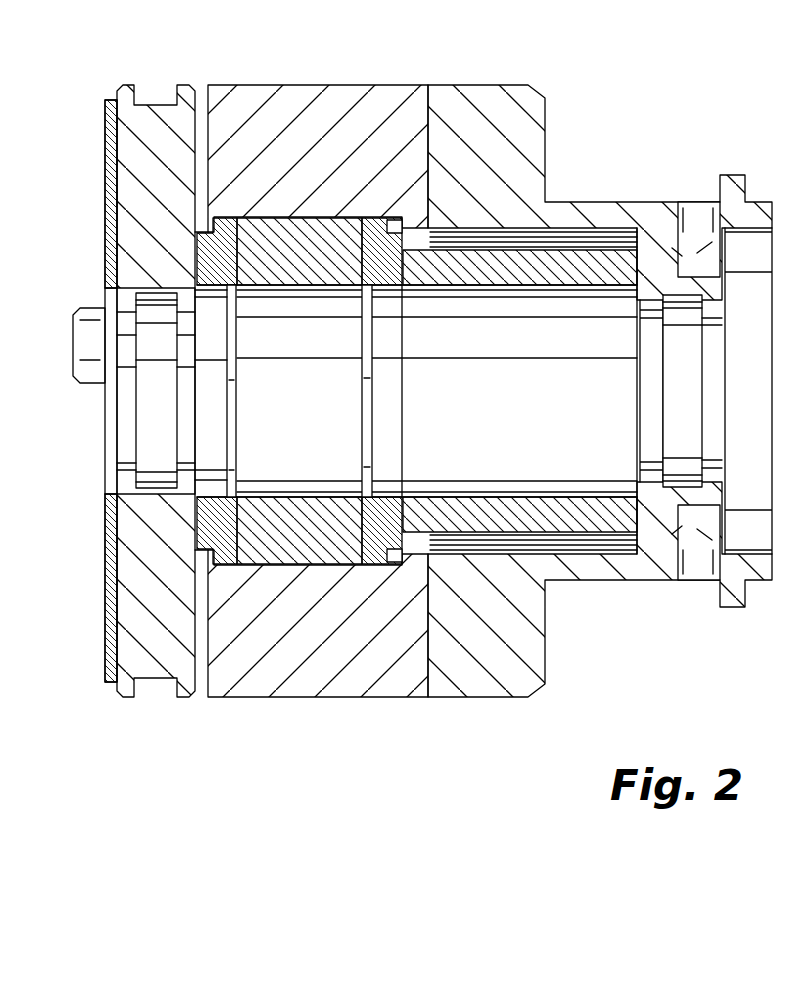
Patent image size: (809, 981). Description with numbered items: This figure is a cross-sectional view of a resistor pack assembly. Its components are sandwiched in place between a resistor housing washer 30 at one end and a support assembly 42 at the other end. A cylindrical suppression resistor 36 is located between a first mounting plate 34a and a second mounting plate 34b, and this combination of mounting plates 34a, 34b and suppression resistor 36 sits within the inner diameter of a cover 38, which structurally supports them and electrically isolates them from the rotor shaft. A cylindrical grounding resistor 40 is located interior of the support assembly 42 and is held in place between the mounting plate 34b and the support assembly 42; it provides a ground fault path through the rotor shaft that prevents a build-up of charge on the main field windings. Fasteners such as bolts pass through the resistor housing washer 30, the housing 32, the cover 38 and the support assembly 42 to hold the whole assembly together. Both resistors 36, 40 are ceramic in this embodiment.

The resistor housing washer 30 is at (105, 135).
The housing 32 is at (133, 92).
The mounting plate 34a is at (230, 218).
The mounting plate 34b is at (373, 218).
The cylindrical suppression resistor 36 is at (280, 218).
The cover 38 is at (340, 85).
The cylindrical grounding resistor 40 is at (568, 253).
The support assembly 42 is at (541, 92).